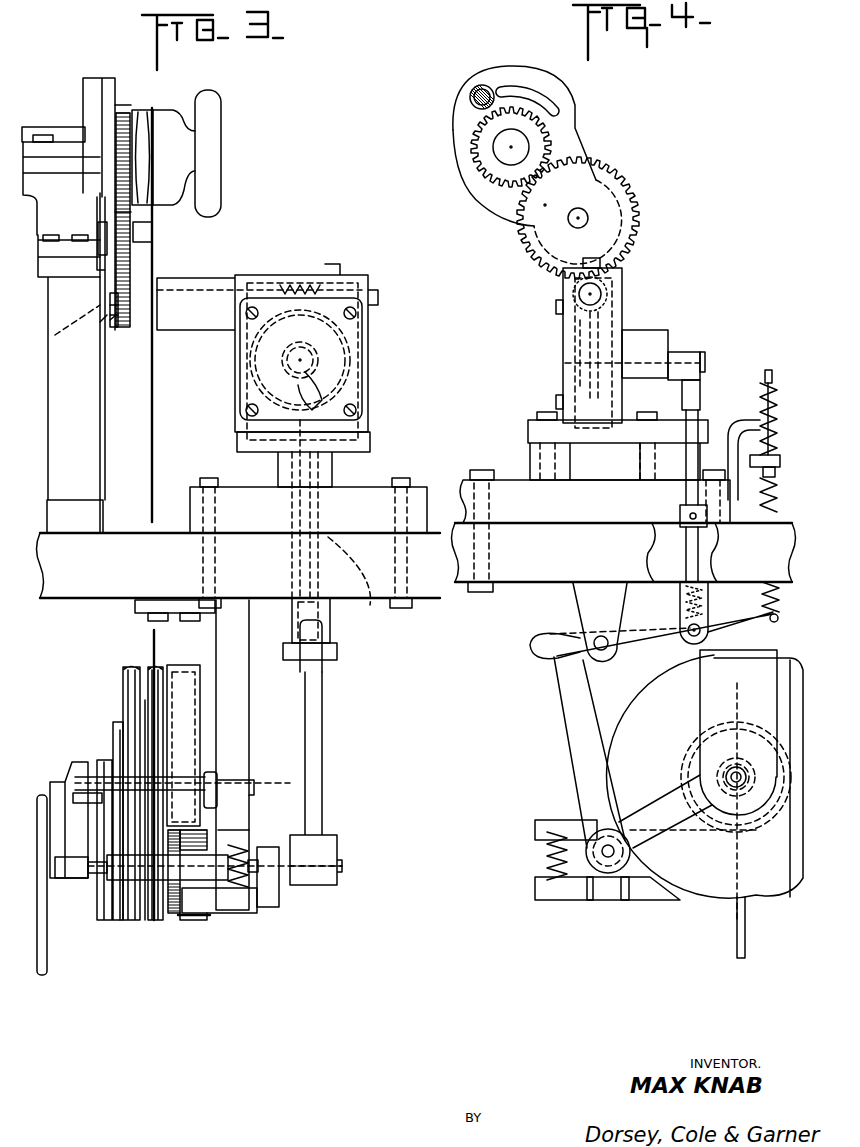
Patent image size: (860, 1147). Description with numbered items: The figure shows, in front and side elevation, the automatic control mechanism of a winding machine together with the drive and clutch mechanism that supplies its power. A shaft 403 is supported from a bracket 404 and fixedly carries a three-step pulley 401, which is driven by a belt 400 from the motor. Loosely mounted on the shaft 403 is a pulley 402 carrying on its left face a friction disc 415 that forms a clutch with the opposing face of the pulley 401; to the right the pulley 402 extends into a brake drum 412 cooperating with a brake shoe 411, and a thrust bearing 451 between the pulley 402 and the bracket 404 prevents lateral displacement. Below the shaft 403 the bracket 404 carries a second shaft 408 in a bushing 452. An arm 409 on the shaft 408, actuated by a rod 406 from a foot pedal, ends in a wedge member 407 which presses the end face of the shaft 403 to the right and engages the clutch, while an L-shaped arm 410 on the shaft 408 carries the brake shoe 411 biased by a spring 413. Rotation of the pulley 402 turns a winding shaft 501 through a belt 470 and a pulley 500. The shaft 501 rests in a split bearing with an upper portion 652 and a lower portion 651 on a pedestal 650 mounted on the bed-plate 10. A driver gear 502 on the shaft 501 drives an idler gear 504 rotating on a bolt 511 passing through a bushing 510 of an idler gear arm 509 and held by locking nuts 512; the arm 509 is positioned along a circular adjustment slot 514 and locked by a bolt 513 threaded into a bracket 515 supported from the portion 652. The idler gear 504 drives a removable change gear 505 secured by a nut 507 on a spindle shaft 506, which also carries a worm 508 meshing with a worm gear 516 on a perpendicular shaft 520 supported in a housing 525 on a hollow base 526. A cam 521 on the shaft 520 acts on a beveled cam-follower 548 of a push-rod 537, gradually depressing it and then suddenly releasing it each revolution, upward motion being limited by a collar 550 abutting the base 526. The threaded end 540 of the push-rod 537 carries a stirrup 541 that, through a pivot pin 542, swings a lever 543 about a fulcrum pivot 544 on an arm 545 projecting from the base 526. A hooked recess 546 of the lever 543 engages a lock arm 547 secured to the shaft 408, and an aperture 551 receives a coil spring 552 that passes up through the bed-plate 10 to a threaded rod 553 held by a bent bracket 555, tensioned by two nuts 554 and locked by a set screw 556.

In FIG. 3, the bed-plate 10 is at (120, 533).
In FIG. 4, the bed-plate 10 is at (497, 523).
In FIG. 3, the belt 400 is at (103, 760).
In FIG. 3, the three-step pulley 401 is at (132, 920).
In FIG. 4, the three-step pulley 401 is at (713, 903).
In FIG. 3, the pulley 402 is at (163, 917).
In FIG. 3, the shaft 403 is at (253, 785).
In FIG. 4, the shaft 403 is at (726, 775).
In FIG. 3, the bracket 404 is at (250, 722).
In FIG. 4, the bracket 404 is at (700, 680).
In FIG. 3, the rod 406 is at (43, 977).
In FIG. 4, the rod 406 is at (747, 944).
In FIG. 3, the wedge member 407 is at (78, 765).
In FIG. 3, the second shaft 408 is at (100, 880).
In FIG. 4, the second shaft 408 is at (606, 862).
In FIG. 3, the arm 409 is at (60, 850).
In FIG. 3, the L-shaped arm 410 is at (272, 903).
In FIG. 4, the L-shaped arm 410 is at (615, 902).
In FIG. 3, the brake shoe 411 is at (200, 905).
In FIG. 4, the brake shoe 411 is at (672, 900).
In FIG. 3, the brake drum 412 is at (197, 923).
In FIG. 4, the brake drum 412 is at (736, 898).
In FIG. 3, the spring 413 is at (257, 882).
In FIG. 4, the spring 413 is at (547, 857).
In FIG. 3, the friction disc 415 is at (150, 923).
In FIG. 3, the thrust bearing 451 is at (208, 772).
In FIG. 3, the bushing 452 is at (125, 878).
In FIG. 3, the belt 470 is at (138, 248).
In FIG. 3, the pulley 500 is at (155, 108).
In FIG. 4, the winding shaft 501 is at (495, 152).
In FIG. 3, the driver gear 502 is at (125, 110).
In FIG. 4, the driver gear 502 is at (538, 140).
In FIG. 3, the idler gear 504 is at (137, 262).
In FIG. 4, the idler gear 504 is at (616, 175).
In FIG. 3, the change gear 505 is at (125, 328).
In FIG. 3, the spindle shaft 506 is at (100, 325).
In FIG. 3, the nut 507 is at (112, 323).
In FIG. 3, the worm 508 is at (300, 278).
In FIG. 4, the worm 508 is at (605, 294).
In FIG. 3, the idler gear arm 509 is at (112, 212).
In FIG. 4, the idler gear arm 509 is at (607, 210).
In FIG. 3, the bushing 510 is at (153, 240).
In FIG. 3, the bolt 511 is at (100, 262).
In FIG. 4, the bolt 511 is at (570, 223).
In FIG. 3, the locking nuts 512 is at (55, 335).
In FIG. 3, the bolt 513 is at (118, 105).
In FIG. 4, the bolt 513 is at (470, 98).
In FIG. 4, the circular adjustment slot 514 is at (547, 93).
In FIG. 3, the bracket 515 is at (82, 88).
In FIG. 3, the worm gear 516 is at (318, 345).
In FIG. 4, the worm gear 516 is at (568, 387).
In FIG. 4, the shaft 520 is at (663, 328).
In FIG. 3, the cam 521 is at (363, 330).
In FIG. 4, the cam 521 is at (693, 368).
In FIG. 3, the housing 525 is at (357, 270).
In FIG. 4, the housing 525 is at (622, 278).
In FIG. 3, the hollow base 526 is at (377, 485).
In FIG. 4, the hollow base 526 is at (462, 478).
In FIG. 3, the push-rod 537 is at (310, 467).
In FIG. 4, the push-rod 537 is at (700, 440).
In FIG. 4, the threaded end 540 is at (681, 600).
In FIG. 3, the stirrup 541 is at (333, 628).
In FIG. 4, the stirrup 541 is at (708, 598).
In FIG. 3, the pivot pin 542 is at (337, 651).
In FIG. 4, the pivot pin 542 is at (692, 640).
In FIG. 3, the lever 543 is at (307, 638).
In FIG. 4, the lever 543 is at (648, 636).
In FIG. 4, the fulcrum pivot 544 is at (597, 637).
In FIG. 3, the arm 545 is at (326, 604).
In FIG. 4, the arm 545 is at (573, 598).
In FIG. 4, the hooked recess 546 is at (548, 658).
In FIG. 3, the lock arm 547 is at (322, 750).
In FIG. 4, the lock arm 547 is at (558, 697).
In FIG. 3, the cam-follower 548 is at (368, 386).
In FIG. 4, the cam-follower 548 is at (697, 398).
In FIG. 3, the collar 550 is at (367, 583).
In FIG. 4, the collar 550 is at (686, 524).
In FIG. 4, the aperture 551 is at (775, 622).
In FIG. 4, the coil spring 552 is at (775, 512).
In FIG. 4, the threaded rod 553 is at (765, 378).
In FIG. 4, the nuts 554 is at (745, 425).
In FIG. 4, the bent bracket 555 is at (775, 412).
In FIG. 4, the set screw 556 is at (772, 417).
In FIG. 3, the pedestal 650 is at (112, 398).
In FIG. 3, the lower portion 651 is at (55, 197).
In FIG. 3, the upper portion 652 is at (33, 127).